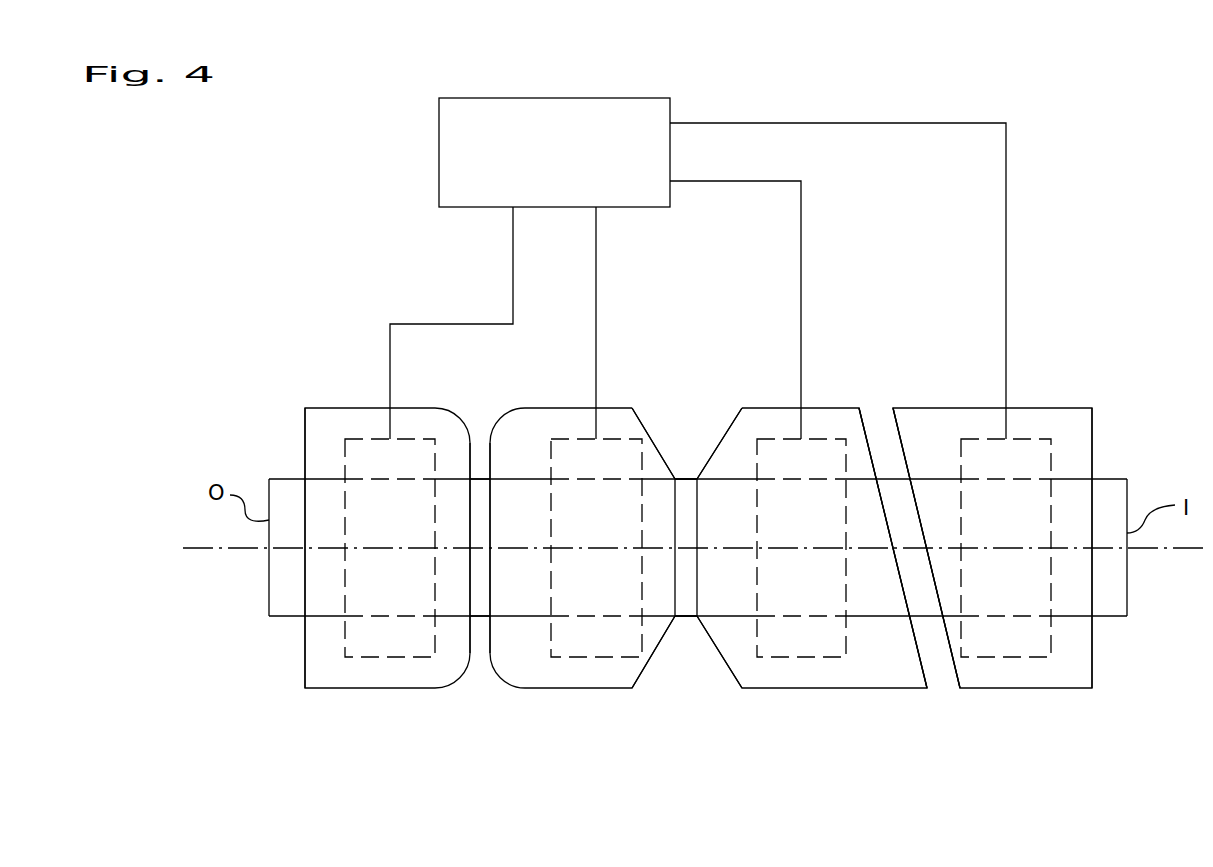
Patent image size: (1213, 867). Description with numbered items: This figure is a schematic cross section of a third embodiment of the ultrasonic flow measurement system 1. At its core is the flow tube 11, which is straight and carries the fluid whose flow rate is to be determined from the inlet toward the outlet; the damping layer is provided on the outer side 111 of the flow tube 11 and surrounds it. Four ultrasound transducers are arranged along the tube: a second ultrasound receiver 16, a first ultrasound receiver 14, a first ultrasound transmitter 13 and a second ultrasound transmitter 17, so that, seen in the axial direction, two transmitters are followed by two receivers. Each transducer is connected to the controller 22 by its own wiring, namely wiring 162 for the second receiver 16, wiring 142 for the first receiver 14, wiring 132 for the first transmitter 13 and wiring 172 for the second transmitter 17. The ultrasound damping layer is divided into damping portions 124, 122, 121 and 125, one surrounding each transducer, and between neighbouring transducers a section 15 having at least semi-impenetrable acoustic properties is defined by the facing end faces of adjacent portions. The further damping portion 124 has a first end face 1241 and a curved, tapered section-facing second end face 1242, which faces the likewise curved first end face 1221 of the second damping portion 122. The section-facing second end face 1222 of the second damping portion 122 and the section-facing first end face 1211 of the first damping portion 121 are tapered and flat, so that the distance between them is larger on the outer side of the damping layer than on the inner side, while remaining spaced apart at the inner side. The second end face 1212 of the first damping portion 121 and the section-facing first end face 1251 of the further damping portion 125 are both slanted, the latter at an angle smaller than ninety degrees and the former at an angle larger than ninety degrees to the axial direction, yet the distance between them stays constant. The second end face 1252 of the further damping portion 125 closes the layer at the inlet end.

The ultrasonic flow measurement system 1 is at (767, 698).
The flow tube 11 is at (640, 440).
The outer side of flow tube 111 is at (269, 578).
The first ultrasound transmitter 13 is at (765, 405).
The wiring 132 is at (801, 255).
The first ultrasound receiver 14 is at (577, 438).
The wiring 142 is at (596, 262).
The section having at least semi-impenetrable acoustic properties 15 is at (480, 445).
The second ultrasound receiver 16 is at (373, 437).
The wiring 162 is at (513, 271).
The second ultrasound transmitter 17 is at (982, 437).
The wiring 172 is at (1006, 190).
The controller 22 is at (478, 128).
The first damping portion 121 is at (815, 672).
The section-facing first end face of first damping portion 1211 is at (702, 660).
The second end face of first damping portion 1212 is at (912, 656).
The second damping portion 122 is at (580, 672).
The first end face of second damping portion 1221 is at (494, 655).
The section-facing second end face of second damping portion 1222 is at (660, 655).
The further damping portion 124 is at (352, 670).
The first end face of further damping portion 1241 is at (305, 643).
The section-facing second end face of further damping portion 1242 is at (468, 657).
The further damping portion 125 is at (1060, 675).
The section-facing first end face of further damping portion 1251 is at (990, 672).
The second end face of further damping portion 1252 is at (1092, 660).